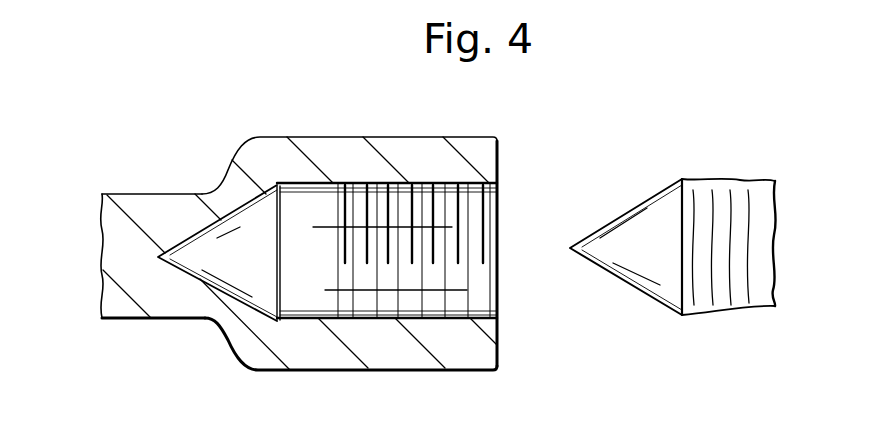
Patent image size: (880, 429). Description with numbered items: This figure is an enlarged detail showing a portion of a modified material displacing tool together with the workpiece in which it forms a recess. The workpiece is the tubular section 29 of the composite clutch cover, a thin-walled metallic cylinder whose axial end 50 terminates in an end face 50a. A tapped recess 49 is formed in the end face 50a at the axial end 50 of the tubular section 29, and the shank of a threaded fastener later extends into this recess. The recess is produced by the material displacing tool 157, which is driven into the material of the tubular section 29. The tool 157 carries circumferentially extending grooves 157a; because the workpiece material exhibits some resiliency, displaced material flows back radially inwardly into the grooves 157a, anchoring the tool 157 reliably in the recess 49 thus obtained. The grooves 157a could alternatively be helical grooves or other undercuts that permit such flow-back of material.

The tubular section 29 is at (188, 142).
The axial end 50 is at (332, 150).
The end face 50a is at (497, 153).
The recesses 49 is at (417, 215).
The material displacing tool 157 is at (703, 202).
The circumferentially extending grooves 157a is at (708, 317).